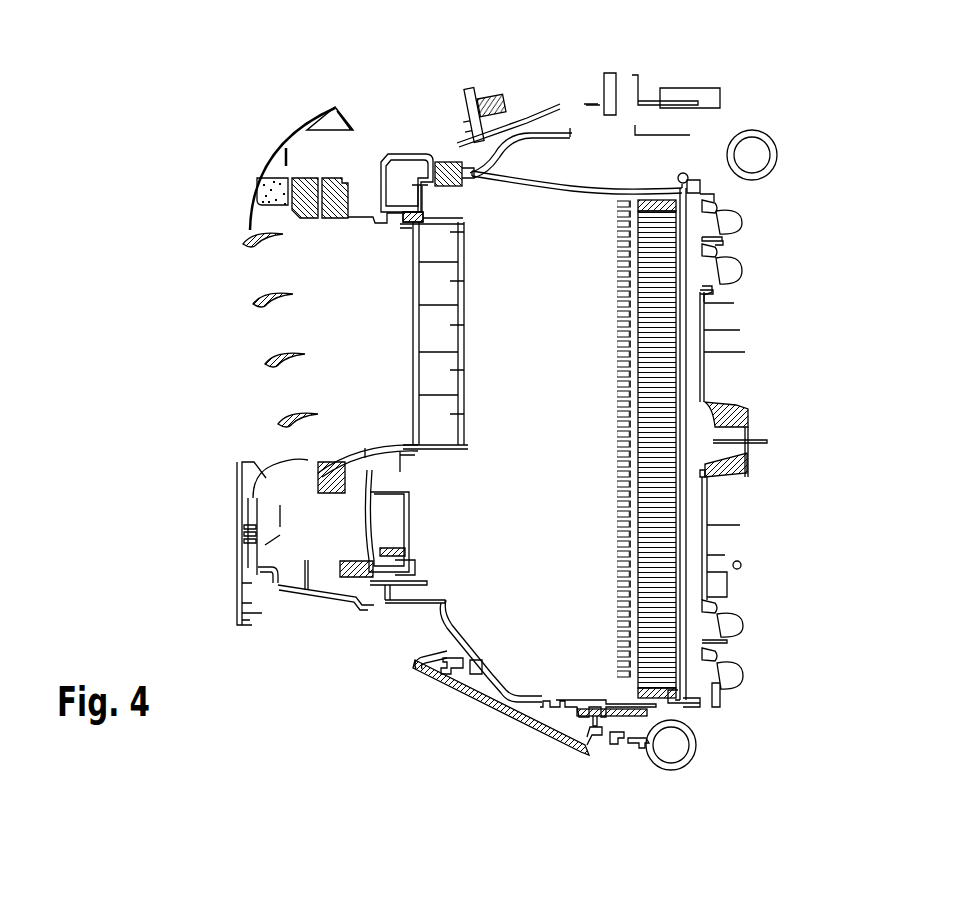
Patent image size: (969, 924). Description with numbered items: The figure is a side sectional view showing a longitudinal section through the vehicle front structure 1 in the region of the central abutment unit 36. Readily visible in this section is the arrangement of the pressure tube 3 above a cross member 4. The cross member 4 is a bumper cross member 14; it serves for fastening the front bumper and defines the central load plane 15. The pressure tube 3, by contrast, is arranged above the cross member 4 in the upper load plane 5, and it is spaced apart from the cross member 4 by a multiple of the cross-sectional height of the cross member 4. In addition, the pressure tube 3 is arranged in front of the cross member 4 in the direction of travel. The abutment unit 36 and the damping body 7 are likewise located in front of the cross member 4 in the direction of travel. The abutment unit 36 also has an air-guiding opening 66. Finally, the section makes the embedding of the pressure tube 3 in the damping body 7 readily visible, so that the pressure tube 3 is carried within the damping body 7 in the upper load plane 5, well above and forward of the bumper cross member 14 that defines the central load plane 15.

The vehicle front structure 1 is at (172, 78).
The pressure tube 3 is at (310, 200).
The cross member 4 is at (418, 510).
The upper load plane 5 is at (212, 182).
The damping body 7 is at (268, 177).
The bumper cross member 14 is at (408, 525).
The central load plane 15 is at (210, 497).
The central abutment unit 36 is at (343, 200).
The air-guiding opening 66 is at (335, 218).